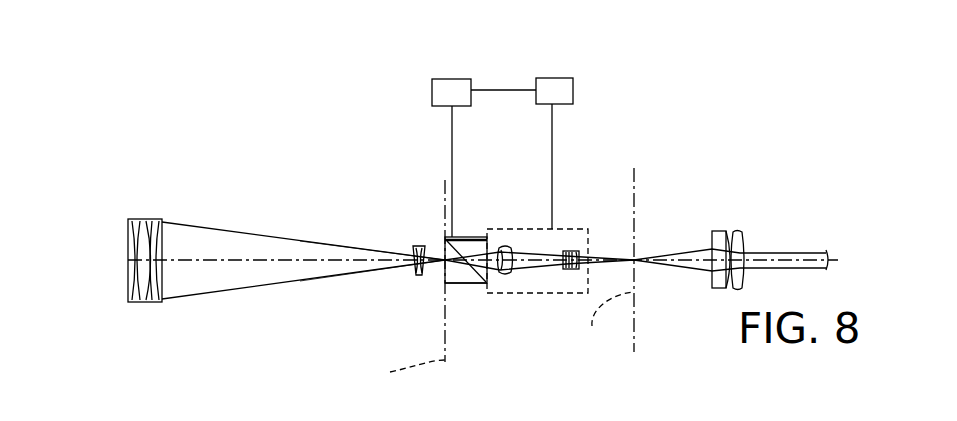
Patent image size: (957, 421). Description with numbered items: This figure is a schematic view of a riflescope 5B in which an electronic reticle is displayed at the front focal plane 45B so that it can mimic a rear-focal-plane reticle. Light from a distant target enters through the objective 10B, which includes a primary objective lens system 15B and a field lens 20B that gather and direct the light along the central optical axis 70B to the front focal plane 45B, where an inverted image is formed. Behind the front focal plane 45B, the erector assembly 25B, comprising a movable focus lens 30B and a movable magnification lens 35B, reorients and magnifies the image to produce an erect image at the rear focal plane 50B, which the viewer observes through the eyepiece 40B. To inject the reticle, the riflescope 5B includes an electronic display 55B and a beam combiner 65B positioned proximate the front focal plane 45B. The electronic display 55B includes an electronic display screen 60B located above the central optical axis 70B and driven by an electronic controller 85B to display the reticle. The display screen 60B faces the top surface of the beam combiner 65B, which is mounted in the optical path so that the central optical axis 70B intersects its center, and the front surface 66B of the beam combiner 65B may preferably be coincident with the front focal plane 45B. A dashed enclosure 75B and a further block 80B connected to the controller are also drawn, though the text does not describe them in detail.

The riflescope 5B is at (366, 80).
The objective 10B is at (408, 243).
The primary objective lens system 15B is at (142, 303).
The field lens 20B is at (418, 246).
The erector assembly 25B is at (570, 279).
The focus lens 30B is at (509, 243).
The magnification lens 35B is at (566, 250).
The eyepiece 40B is at (729, 232).
The front focal plane 45B is at (390, 374).
The rear focal plane 50B is at (603, 324).
The electronic display 55B is at (460, 233).
The electronic display screen 60B is at (483, 236).
The beam combiner 65B is at (470, 286).
The front surface 66B is at (444, 283).
The central optical axis 70B is at (220, 262).
The relay module 75B is at (533, 228).
The controller 80B is at (553, 77).
The electronic controller 85B is at (447, 78).